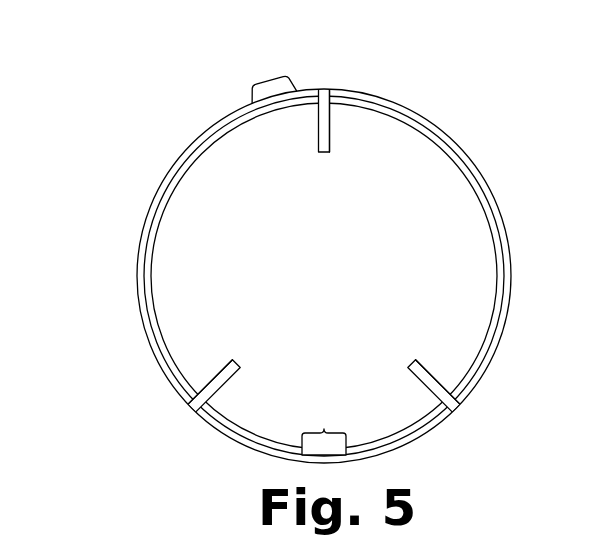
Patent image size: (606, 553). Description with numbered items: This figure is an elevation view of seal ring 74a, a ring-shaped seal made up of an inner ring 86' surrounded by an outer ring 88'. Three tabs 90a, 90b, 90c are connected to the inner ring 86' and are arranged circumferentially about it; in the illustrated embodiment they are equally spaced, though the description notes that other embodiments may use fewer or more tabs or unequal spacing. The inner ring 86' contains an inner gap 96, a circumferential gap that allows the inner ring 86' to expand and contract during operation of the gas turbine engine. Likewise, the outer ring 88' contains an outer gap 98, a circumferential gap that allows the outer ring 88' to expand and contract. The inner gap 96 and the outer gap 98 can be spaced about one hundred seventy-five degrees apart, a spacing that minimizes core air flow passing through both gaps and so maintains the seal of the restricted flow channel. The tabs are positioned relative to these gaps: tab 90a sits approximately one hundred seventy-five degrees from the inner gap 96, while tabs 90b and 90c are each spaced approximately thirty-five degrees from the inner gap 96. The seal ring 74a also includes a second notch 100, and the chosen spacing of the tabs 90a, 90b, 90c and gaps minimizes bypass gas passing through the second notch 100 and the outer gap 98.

The seal ring 74a is at (134, 133).
The inner ring 86' is at (367, 276).
The outer ring 88' is at (327, 270).
The tab 90a is at (320, 155).
The tab 90b is at (410, 364).
The tab 90c is at (240, 366).
The inner gap 96 is at (323, 433).
The outer gap 98 is at (273, 77).
The second notch 100 is at (331, 106).